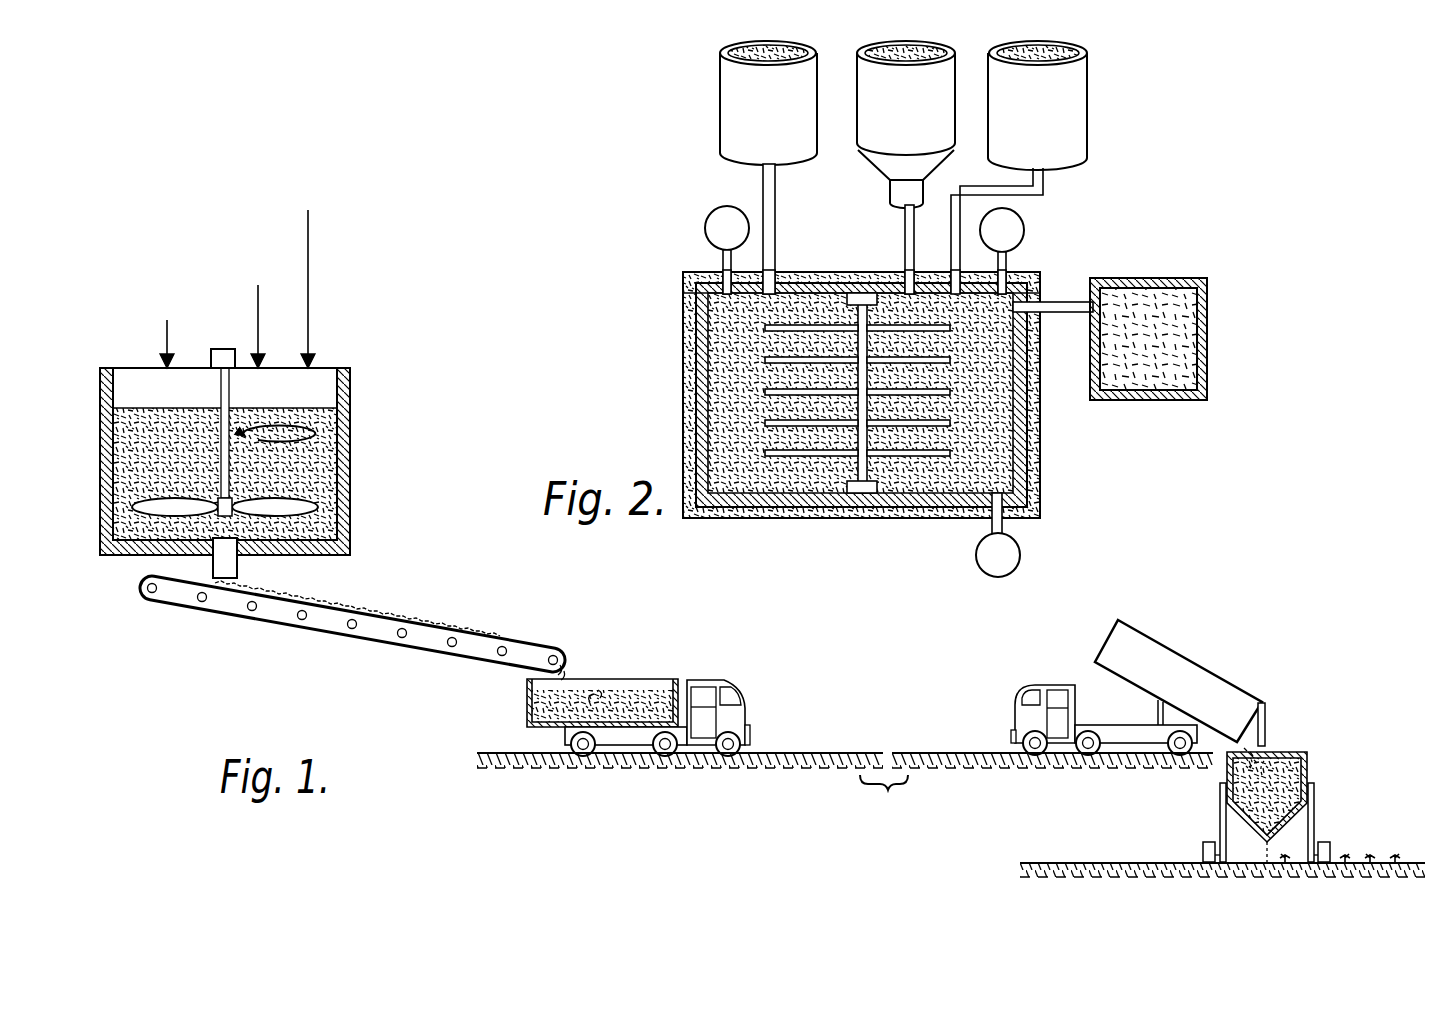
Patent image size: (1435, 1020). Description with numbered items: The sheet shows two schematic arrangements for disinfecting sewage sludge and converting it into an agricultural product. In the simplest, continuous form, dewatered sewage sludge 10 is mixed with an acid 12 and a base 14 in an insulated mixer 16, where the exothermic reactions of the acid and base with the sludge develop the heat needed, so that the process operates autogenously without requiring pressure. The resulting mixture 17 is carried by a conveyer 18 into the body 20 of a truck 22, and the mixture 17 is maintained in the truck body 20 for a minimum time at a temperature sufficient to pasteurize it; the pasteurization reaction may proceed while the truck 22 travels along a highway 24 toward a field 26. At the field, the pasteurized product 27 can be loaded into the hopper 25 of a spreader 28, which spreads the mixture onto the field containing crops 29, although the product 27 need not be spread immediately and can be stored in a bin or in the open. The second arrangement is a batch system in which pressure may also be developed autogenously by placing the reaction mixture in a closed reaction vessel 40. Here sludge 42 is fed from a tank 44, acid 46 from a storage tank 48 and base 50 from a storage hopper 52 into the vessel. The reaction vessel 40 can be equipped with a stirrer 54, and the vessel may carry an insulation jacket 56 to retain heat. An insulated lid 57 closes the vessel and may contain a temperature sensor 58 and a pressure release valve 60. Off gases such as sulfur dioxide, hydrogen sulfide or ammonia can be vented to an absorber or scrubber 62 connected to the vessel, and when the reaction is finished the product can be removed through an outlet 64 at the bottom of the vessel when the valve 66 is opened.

In FIG. 1, the dewatered sewage sludge 10 is at (165, 336).
In FIG. 1, the acid 12 is at (256, 327).
In FIG. 1, the base 14 is at (312, 286).
In FIG. 1, the insulated mixer 16 is at (350, 405).
In FIG. 1, the mixture 17 is at (337, 473).
In FIG. 1, the conveyer 18 is at (372, 640).
In FIG. 1, the truck body 20 is at (527, 702).
In FIG. 1, the truck 22 is at (657, 676).
In FIG. 1, the highway 24 is at (848, 753).
In FIG. 1, the hopper 25 is at (1225, 773).
In FIG. 1, the field 26 is at (1170, 862).
In FIG. 1, the pasteurized product 27 is at (1262, 778).
In FIG. 1, the spreader 28 is at (1250, 777).
In FIG. 1, the crops 29 is at (1350, 855).
In FIG. 2, the reaction vessel 40 is at (855, 374).
In FIG. 2, the sludge 42 is at (720, 57).
In FIG. 2, the tank 44 is at (720, 125).
In FIG. 2, the acid 46 is at (1087, 70).
In FIG. 2, the storage tank 48 is at (1087, 122).
In FIG. 2, the base 50 is at (860, 66).
In FIG. 2, the storage hopper 52 is at (872, 166).
In FIG. 2, the stirrer 54 is at (765, 330).
In FIG. 2, the insulation jacket 56 is at (1040, 448).
In FIG. 2, the insulated lid 57 is at (1030, 272).
In FIG. 2, the temperature sensor 58 is at (705, 222).
In FIG. 2, the pressure release valve 60 is at (1024, 228).
In FIG. 2, the absorber or scrubber 62 is at (1207, 325).
In FIG. 2, the outlet 64 is at (1002, 524).
In FIG. 2, the valve 66 is at (1020, 555).